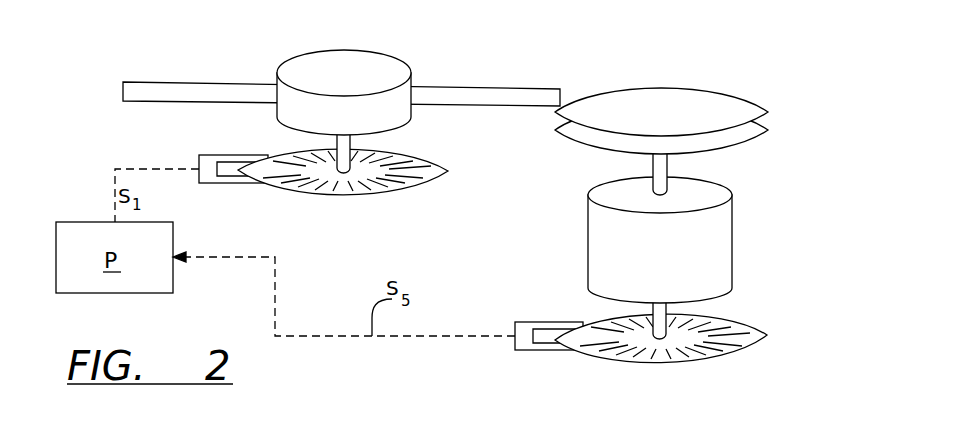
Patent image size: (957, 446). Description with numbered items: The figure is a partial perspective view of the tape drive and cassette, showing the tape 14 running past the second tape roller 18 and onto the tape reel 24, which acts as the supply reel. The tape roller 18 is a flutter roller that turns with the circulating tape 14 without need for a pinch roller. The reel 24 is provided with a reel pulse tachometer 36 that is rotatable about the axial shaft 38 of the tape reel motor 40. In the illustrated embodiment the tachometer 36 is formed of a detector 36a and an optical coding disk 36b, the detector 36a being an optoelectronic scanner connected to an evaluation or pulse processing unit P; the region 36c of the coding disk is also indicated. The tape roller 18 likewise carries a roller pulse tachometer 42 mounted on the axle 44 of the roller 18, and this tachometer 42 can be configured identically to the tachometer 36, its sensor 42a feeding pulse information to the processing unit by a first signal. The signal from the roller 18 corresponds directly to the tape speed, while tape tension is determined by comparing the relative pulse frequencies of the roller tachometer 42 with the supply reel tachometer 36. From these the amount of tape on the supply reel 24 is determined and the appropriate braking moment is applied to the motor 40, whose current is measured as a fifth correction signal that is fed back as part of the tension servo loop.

The tape 14 is at (480, 86).
The second tape roller 18 is at (357, 73).
The second reel 24 is at (677, 112).
The reel pulse tachometer 36 is at (778, 333).
The detector 36a is at (533, 322).
The optical coding disk 36b is at (715, 357).
The fan blade 36c is at (632, 358).
The axial shaft 38 is at (660, 313).
The tape reel motor 40 is at (612, 250).
The roller pulse tachometer 42 is at (393, 197).
The sensor 42a is at (212, 185).
The axle 44 is at (352, 144).